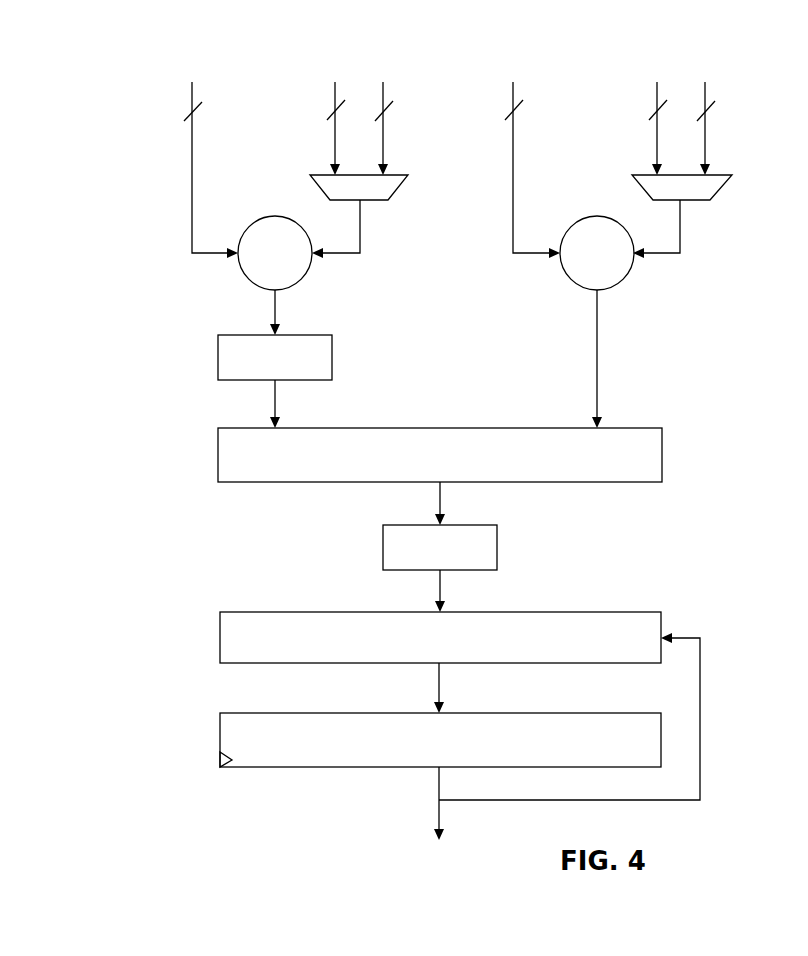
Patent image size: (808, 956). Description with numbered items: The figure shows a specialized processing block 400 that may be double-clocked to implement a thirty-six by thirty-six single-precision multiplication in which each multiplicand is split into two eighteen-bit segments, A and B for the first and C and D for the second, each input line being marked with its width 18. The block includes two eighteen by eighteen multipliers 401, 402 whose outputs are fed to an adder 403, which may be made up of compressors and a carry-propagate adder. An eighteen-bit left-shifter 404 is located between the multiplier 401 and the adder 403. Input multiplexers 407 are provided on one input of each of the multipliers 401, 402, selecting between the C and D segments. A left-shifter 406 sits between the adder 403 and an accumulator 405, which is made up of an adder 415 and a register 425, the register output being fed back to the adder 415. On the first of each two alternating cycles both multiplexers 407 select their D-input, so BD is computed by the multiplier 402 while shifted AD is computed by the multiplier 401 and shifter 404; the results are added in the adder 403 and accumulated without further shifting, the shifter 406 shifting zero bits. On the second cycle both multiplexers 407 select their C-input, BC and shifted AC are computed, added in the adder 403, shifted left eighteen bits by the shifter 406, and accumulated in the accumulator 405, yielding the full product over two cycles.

The specialized processing block 400 is at (138, 46).
The 18-bit segment 18 is at (188, 111).
The multiplier 401 is at (313, 268).
The multiplier 402 is at (635, 268).
The adder 403 is at (283, 482).
The 18-bit left-shifter 404 is at (218, 357).
The accumulator 405 is at (398, 711).
The left-shifter 406 is at (383, 548).
The input multiplexer 407 is at (376, 202).
The adder 415 is at (280, 612).
The register 425 is at (460, 736).